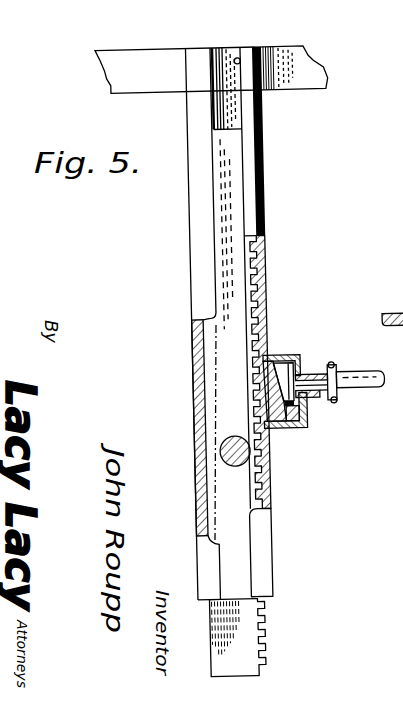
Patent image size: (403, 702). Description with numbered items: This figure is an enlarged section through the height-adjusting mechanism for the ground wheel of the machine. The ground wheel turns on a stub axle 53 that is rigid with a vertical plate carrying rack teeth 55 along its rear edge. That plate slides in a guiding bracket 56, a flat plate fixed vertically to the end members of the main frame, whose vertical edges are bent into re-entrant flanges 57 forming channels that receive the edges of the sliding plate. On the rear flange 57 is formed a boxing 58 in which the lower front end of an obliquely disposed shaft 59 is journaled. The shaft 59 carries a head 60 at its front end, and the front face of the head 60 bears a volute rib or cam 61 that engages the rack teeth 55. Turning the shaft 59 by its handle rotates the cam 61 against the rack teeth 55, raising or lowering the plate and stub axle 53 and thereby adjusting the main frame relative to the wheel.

The stub axle 53 is at (233, 450).
The rack teeth 55 is at (268, 618).
The guiding bracket 56 is at (223, 66).
The re-entrant flanges 57 is at (203, 152).
The boxing 58 is at (298, 358).
The shaft 59 is at (312, 396).
The head 60 is at (293, 432).
The volute rib or cam 61 is at (258, 373).